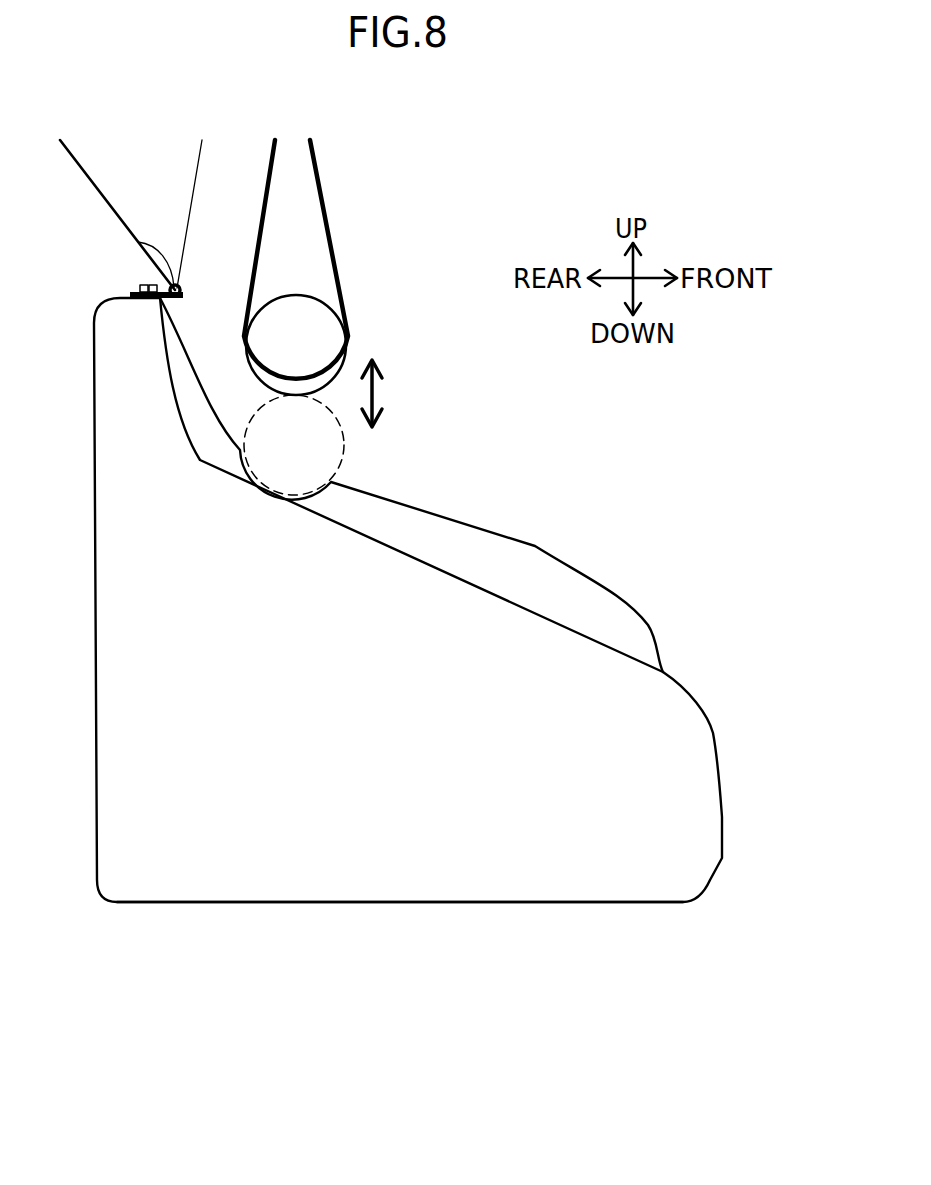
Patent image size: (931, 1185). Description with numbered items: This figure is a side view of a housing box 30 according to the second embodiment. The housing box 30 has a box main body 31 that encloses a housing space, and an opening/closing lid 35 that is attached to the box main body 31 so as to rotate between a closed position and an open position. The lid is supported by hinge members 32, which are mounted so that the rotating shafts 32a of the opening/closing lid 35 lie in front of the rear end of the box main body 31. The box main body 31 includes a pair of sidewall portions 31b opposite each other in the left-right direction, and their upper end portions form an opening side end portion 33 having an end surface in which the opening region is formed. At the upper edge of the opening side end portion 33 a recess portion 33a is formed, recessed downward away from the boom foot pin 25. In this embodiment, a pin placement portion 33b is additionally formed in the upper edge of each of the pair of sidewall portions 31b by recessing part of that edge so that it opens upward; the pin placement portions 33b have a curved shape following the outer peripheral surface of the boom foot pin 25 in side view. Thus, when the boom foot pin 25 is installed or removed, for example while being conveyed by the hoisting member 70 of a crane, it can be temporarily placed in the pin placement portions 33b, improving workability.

The boom foot pin 25 is at (338, 335).
The housing box 30 is at (469, 645).
The box main body 31 is at (715, 782).
The sidewall portions 31b is at (433, 767).
The hinge members 32 is at (140, 285).
The rotating shafts 32a is at (138, 242).
The opening side end portion 33 is at (468, 530).
The recess portion 33a is at (372, 494).
The pin placement portion 33b is at (291, 494).
The opening/closing lid 35 is at (85, 177).
The hoisting member 70 is at (333, 241).